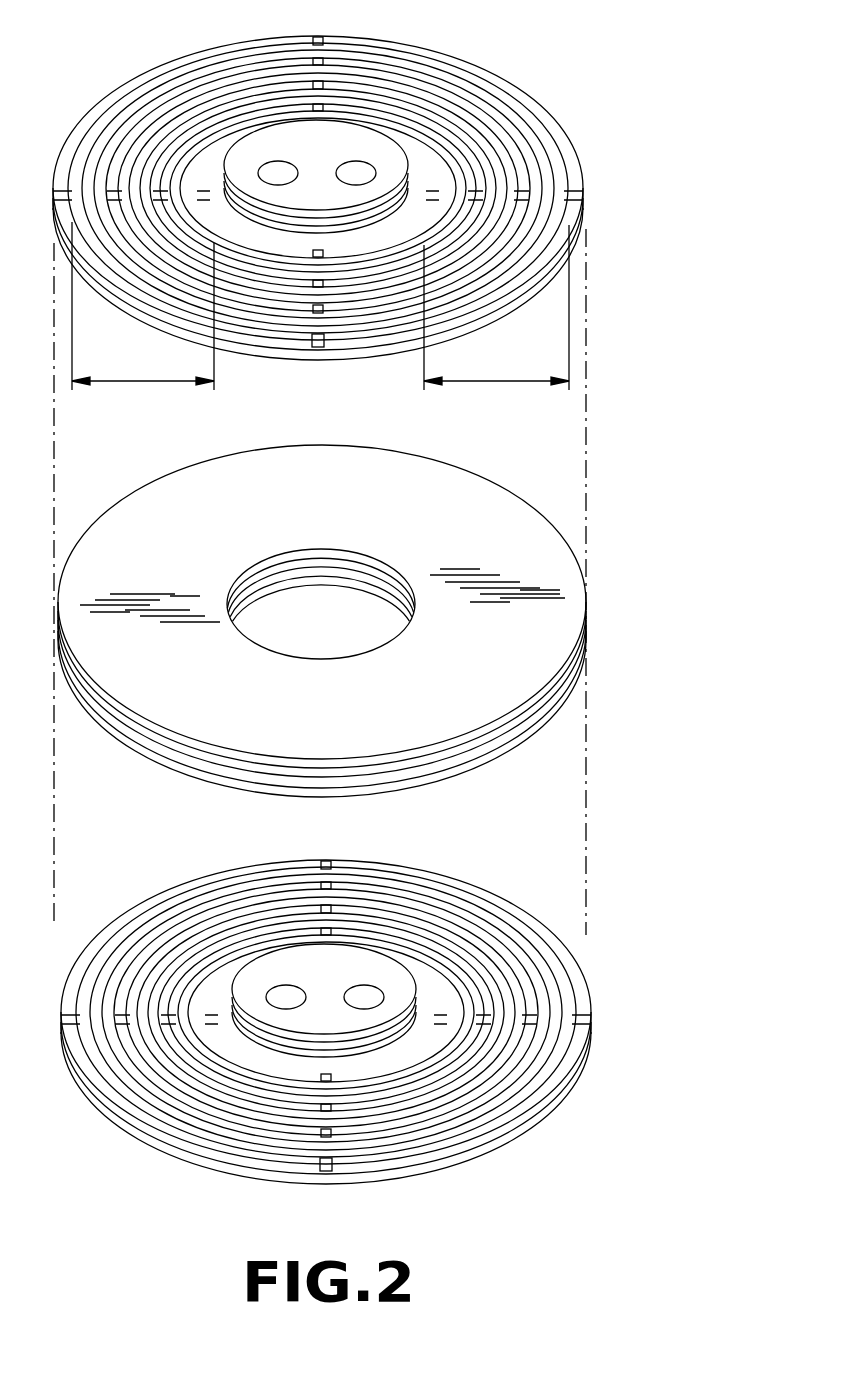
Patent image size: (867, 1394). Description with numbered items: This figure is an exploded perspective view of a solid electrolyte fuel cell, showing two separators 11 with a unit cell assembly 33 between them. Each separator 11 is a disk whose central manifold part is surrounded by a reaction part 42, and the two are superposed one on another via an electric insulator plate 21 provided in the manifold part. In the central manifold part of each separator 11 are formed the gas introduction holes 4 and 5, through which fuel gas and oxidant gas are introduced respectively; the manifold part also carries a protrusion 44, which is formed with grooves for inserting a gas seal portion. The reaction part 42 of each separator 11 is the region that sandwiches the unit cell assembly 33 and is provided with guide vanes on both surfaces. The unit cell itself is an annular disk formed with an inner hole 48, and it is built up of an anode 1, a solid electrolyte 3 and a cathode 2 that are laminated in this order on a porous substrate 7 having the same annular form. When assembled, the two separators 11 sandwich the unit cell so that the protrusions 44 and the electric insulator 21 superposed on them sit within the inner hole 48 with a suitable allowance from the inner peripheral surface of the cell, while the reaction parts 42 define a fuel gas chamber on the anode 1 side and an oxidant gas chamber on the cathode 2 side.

The anode 1 is at (494, 743).
The cathode 2 is at (527, 706).
The solid electrolyte 3 is at (165, 740).
The gas introduction hole 4 is at (278, 162).
The gas introduction hole 5 is at (356, 162).
The porous substrate 7 is at (201, 775).
The separator 11 is at (504, 293).
The electric insulator plate 21 is at (376, 154).
The unit cell assembly 33 is at (167, 478).
The reaction part 42 is at (320, 317).
The protrusion 44 is at (294, 1060).
The inner hole 48 is at (357, 638).